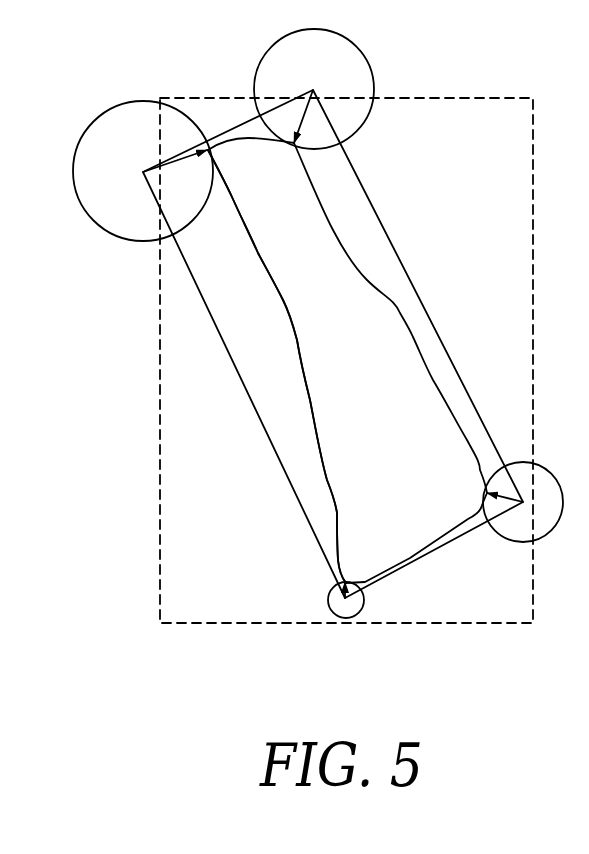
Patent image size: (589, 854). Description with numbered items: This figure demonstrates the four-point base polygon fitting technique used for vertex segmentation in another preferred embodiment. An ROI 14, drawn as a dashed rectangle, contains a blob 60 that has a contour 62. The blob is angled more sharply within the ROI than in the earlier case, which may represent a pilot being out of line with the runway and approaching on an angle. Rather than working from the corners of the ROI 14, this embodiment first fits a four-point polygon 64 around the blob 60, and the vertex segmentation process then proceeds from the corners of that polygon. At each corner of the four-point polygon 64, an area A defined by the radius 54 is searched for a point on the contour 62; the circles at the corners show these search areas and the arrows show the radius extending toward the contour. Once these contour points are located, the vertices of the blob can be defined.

The ROI 14 is at (490, 182).
The radius 54 is at (302, 118).
The blob 60 is at (363, 342).
The contour 62 is at (337, 515).
The four-point polygon 64 is at (243, 383).
The area A is at (343, 50).